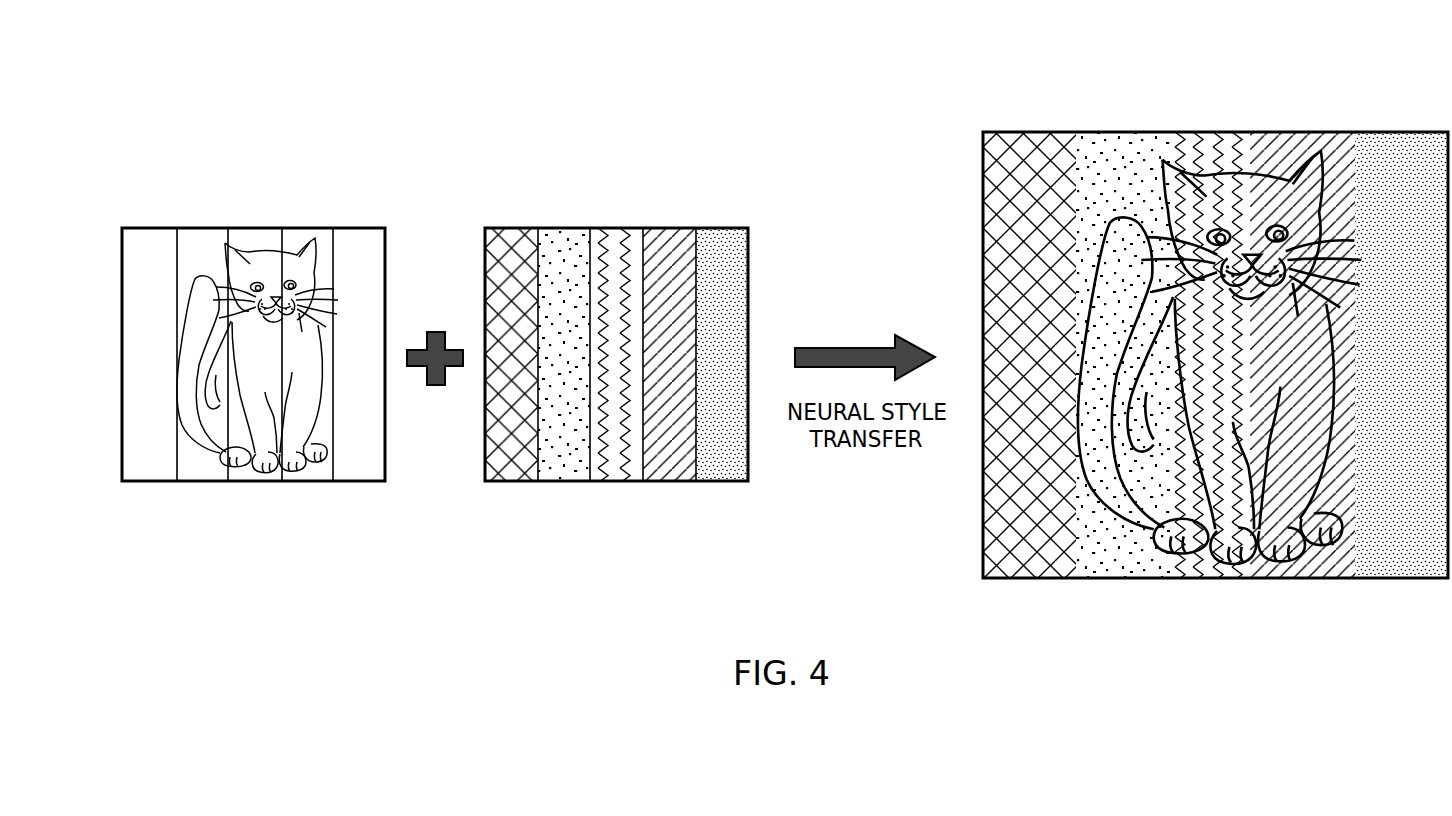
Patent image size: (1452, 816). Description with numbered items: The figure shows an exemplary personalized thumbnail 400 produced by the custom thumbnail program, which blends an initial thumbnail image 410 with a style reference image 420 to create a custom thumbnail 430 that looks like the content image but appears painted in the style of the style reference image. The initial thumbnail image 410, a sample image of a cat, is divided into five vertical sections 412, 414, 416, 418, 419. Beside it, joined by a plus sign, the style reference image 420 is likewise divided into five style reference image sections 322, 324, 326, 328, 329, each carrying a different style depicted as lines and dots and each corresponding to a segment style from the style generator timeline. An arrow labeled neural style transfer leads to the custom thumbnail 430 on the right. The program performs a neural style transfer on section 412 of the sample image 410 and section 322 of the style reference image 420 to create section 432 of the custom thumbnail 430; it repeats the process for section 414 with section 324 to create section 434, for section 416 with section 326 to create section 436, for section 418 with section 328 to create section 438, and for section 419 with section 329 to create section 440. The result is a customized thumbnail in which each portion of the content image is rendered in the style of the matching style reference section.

The personalized thumbnail 400 is at (362, 55).
The initial thumbnail image 410 is at (265, 210).
The section of sample image 412 is at (152, 470).
The section of sample image 414 is at (203, 470).
The section of sample image 416 is at (253, 472).
The section of sample image 418 is at (308, 470).
The section of sample image 419 is at (362, 470).
The style reference image 420 is at (615, 208).
The style reference image section 322 is at (513, 470).
The style reference image section 324 is at (568, 470).
The style reference image section 326 is at (620, 472).
The style reference image section 328 is at (673, 470).
The style reference image section 329 is at (727, 470).
The custom thumbnail 430 is at (1192, 108).
The section of custom thumbnail 432 is at (1033, 580).
The section of custom thumbnail 434 is at (1127, 580).
The section of custom thumbnail 436 is at (1222, 580).
The section of custom thumbnail 438 is at (1310, 580).
The section of custom thumbnail 440 is at (1398, 580).